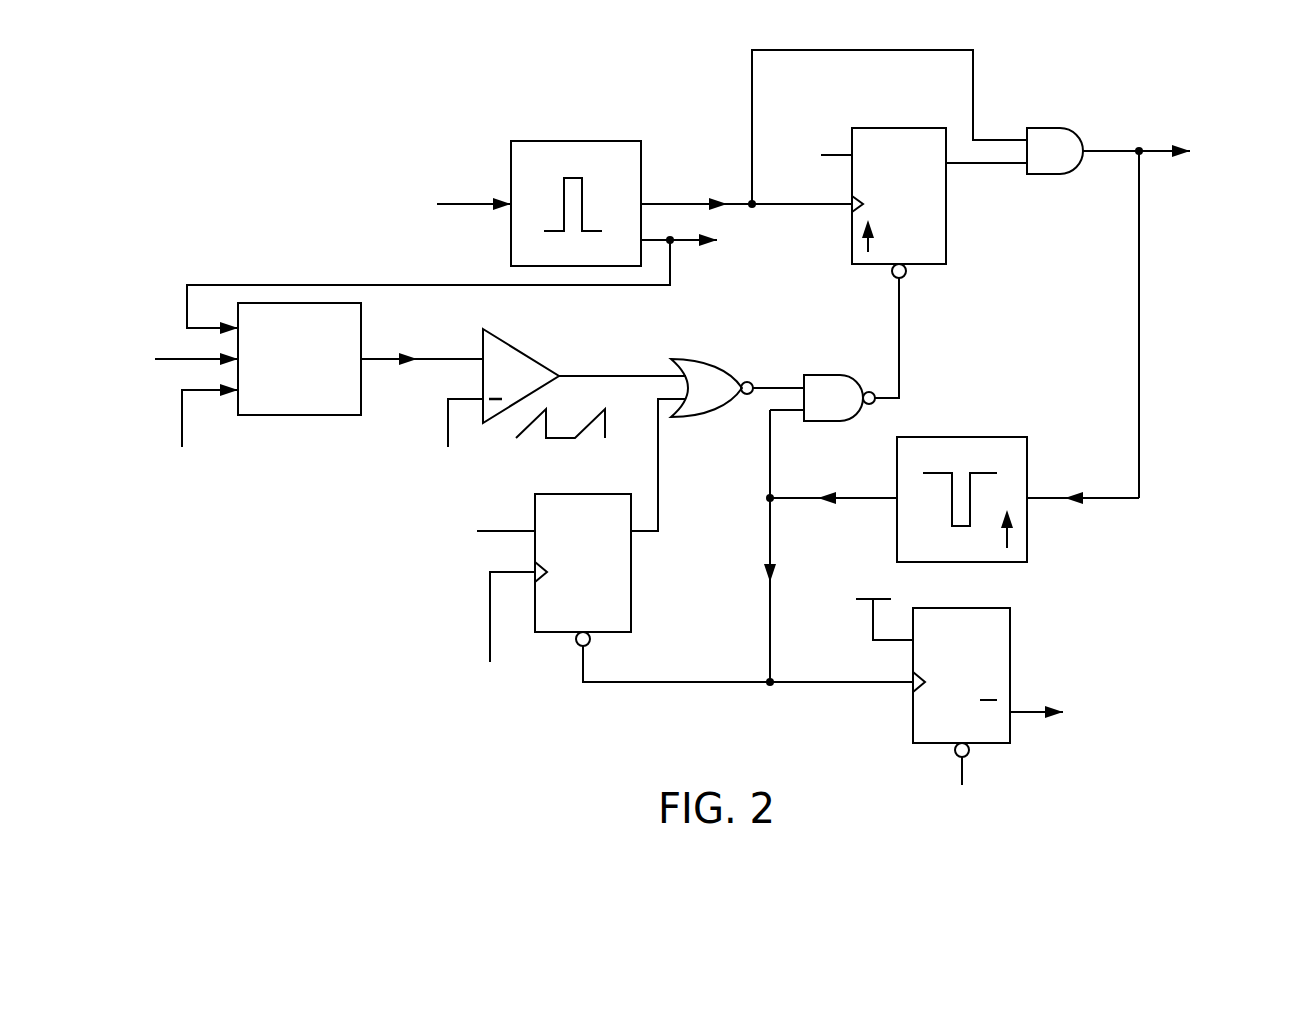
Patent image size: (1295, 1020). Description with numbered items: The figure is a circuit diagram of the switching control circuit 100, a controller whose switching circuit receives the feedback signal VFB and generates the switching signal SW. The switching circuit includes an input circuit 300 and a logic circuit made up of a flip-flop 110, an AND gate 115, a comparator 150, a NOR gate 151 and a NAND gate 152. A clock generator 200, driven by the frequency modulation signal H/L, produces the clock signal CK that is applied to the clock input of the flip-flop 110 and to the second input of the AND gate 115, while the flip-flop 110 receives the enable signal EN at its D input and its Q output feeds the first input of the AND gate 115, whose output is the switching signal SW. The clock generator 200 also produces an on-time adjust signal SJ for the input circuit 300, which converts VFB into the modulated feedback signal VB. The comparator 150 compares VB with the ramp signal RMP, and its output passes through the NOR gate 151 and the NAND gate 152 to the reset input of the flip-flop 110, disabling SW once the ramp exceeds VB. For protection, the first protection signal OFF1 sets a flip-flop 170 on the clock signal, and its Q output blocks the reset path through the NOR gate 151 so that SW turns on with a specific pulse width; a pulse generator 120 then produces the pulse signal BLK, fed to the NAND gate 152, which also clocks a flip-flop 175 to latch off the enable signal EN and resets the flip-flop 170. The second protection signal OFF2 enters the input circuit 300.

The switching control circuit 100 is at (1285, 111).
The flip-flop 110 is at (900, 188).
The AND gate 115 is at (1055, 136).
The pulse generator 120 is at (964, 485).
The comparator 150 is at (544, 381).
The NOR gate 151 is at (712, 376).
The NAND gate 152 is at (839, 383).
The flip-flop 170 is at (586, 556).
The flip-flop 175 is at (965, 668).
The clock generator 200 is at (578, 189).
The input circuit 300 is at (299, 376).